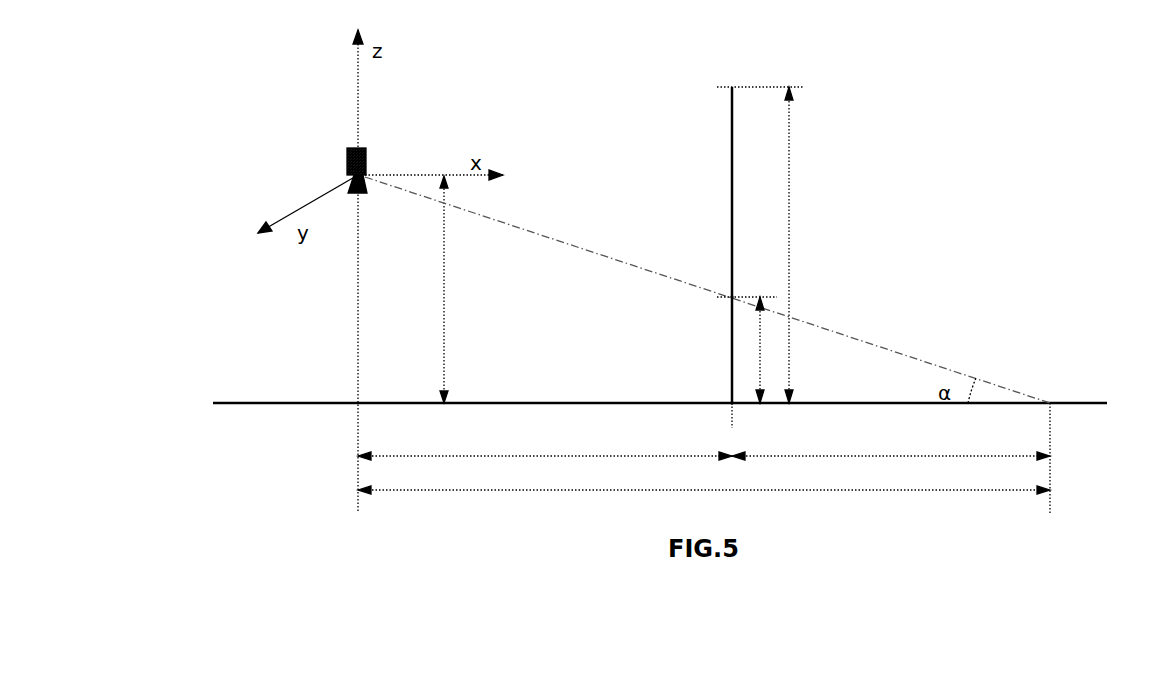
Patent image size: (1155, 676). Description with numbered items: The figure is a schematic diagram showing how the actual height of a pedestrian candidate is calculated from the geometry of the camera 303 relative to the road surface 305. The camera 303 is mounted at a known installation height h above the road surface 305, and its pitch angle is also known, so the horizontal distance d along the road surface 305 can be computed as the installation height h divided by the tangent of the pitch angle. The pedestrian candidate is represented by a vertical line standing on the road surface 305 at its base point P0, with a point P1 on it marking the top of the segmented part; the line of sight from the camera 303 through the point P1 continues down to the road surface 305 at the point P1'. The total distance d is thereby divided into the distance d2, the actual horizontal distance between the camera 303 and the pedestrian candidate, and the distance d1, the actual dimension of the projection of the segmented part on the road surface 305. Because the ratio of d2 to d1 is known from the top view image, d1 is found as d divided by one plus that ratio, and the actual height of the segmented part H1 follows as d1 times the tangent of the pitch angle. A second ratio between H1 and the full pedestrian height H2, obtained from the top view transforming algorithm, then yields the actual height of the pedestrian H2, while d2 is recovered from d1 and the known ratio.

The camera 303 is at (370, 152).
The road surface 305 is at (575, 402).
The installation height h is at (455, 289).
The actual height of the segmented part H1 is at (771, 350).
The actual height of the pedestrian H2 is at (803, 245).
The pole base point P0 is at (730, 402).
The point on pole P1 is at (686, 266).
The projected ground point P1' is at (1075, 410).
The distance d is at (704, 480).
The actual dimension of the projection of the segmented part d1 is at (891, 445).
The actual horizontal distance between the camera and the pedestrian candidate d2 is at (545, 445).